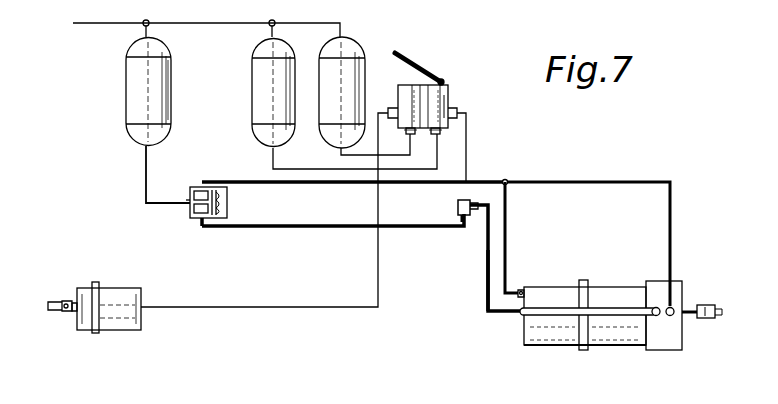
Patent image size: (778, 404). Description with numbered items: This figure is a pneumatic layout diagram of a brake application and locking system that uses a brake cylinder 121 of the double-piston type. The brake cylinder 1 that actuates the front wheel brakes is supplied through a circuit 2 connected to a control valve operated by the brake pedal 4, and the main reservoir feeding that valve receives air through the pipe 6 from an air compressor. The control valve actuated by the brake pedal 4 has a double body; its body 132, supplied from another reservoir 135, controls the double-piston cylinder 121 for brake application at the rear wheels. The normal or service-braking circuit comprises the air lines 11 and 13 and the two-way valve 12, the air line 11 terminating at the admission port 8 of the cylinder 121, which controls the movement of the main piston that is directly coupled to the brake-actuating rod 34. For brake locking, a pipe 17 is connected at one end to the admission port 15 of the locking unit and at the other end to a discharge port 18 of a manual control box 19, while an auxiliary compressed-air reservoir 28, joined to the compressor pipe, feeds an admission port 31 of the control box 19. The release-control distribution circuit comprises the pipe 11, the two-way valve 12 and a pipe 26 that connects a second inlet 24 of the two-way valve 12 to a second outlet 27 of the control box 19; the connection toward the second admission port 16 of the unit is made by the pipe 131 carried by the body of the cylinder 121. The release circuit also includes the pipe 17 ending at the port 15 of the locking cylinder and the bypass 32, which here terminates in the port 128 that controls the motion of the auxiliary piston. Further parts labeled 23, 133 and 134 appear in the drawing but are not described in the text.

The brake cylinder 1 is at (120, 295).
The circuit 2 is at (288, 300).
The brake pedal 4 is at (420, 62).
The pipe 6 is at (195, 22).
The admission port 8 is at (515, 312).
The air line 11 is at (486, 286).
The two-way valve 12 is at (477, 205).
The air line 13 is at (468, 148).
The admission port 15 is at (674, 306).
The second admission port 16 is at (657, 318).
The pipe 17 is at (563, 182).
The discharge port 18 is at (197, 185).
The manual control box 19 is at (230, 209).
The fitting 23 is at (460, 200).
The second inlet 24 is at (465, 216).
The pipe 26 is at (305, 222).
The second outlet 27 is at (205, 220).
The auxiliary compressed-air reservoir 28 is at (118, 88).
The admission port 31 is at (187, 205).
The bypass 32 is at (507, 228).
The brake-actuating rod 34 is at (688, 320).
The brake cylinder 121 is at (555, 345).
The air admission port 128 is at (518, 290).
The pipe 131 is at (616, 310).
The body 132 is at (395, 95).
The reservoir 133 is at (350, 42).
The pump outlet 134 is at (448, 102).
The reservoir 135 is at (260, 82).